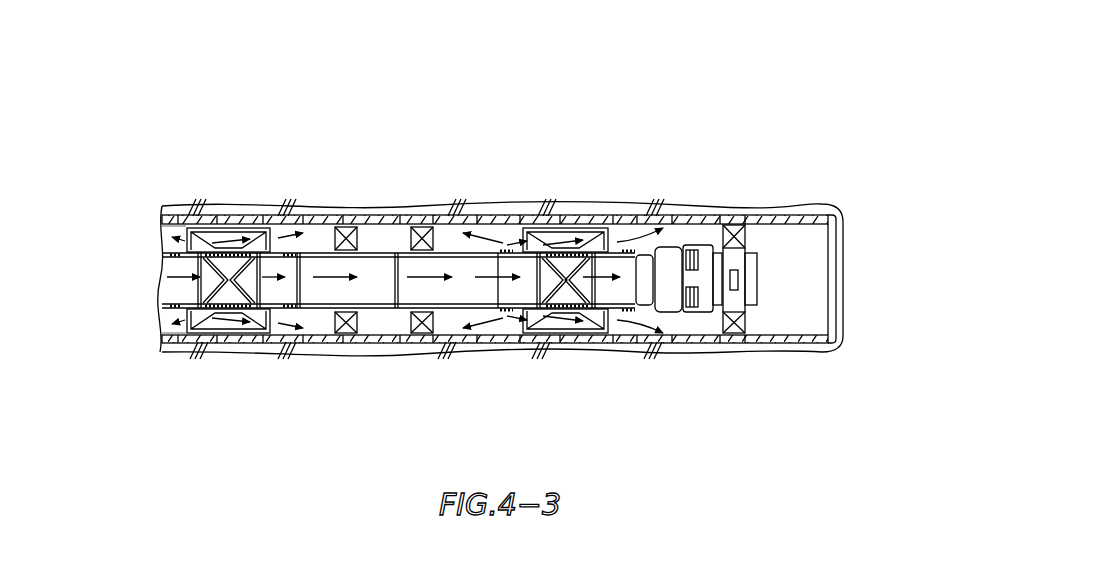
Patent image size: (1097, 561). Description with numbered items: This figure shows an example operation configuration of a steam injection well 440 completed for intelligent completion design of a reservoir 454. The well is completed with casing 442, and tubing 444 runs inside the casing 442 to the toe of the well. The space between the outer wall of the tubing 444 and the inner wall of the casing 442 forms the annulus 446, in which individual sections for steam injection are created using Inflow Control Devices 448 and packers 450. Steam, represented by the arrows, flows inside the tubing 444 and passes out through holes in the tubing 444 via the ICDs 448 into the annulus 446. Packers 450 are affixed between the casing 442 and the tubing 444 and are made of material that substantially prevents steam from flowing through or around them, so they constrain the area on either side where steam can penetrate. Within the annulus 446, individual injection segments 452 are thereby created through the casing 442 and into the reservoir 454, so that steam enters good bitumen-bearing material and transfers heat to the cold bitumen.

The steam injection well 440 is at (776, 108).
The casing 442 is at (777, 350).
The tubing 444 is at (160, 270).
The annulus 446 is at (150, 228).
The Inflow Control Device (ICD) 448 is at (200, 295).
The packer 450 is at (413, 340).
The individual injection segments 452 is at (205, 197).
The reservoir 454 is at (790, 197).